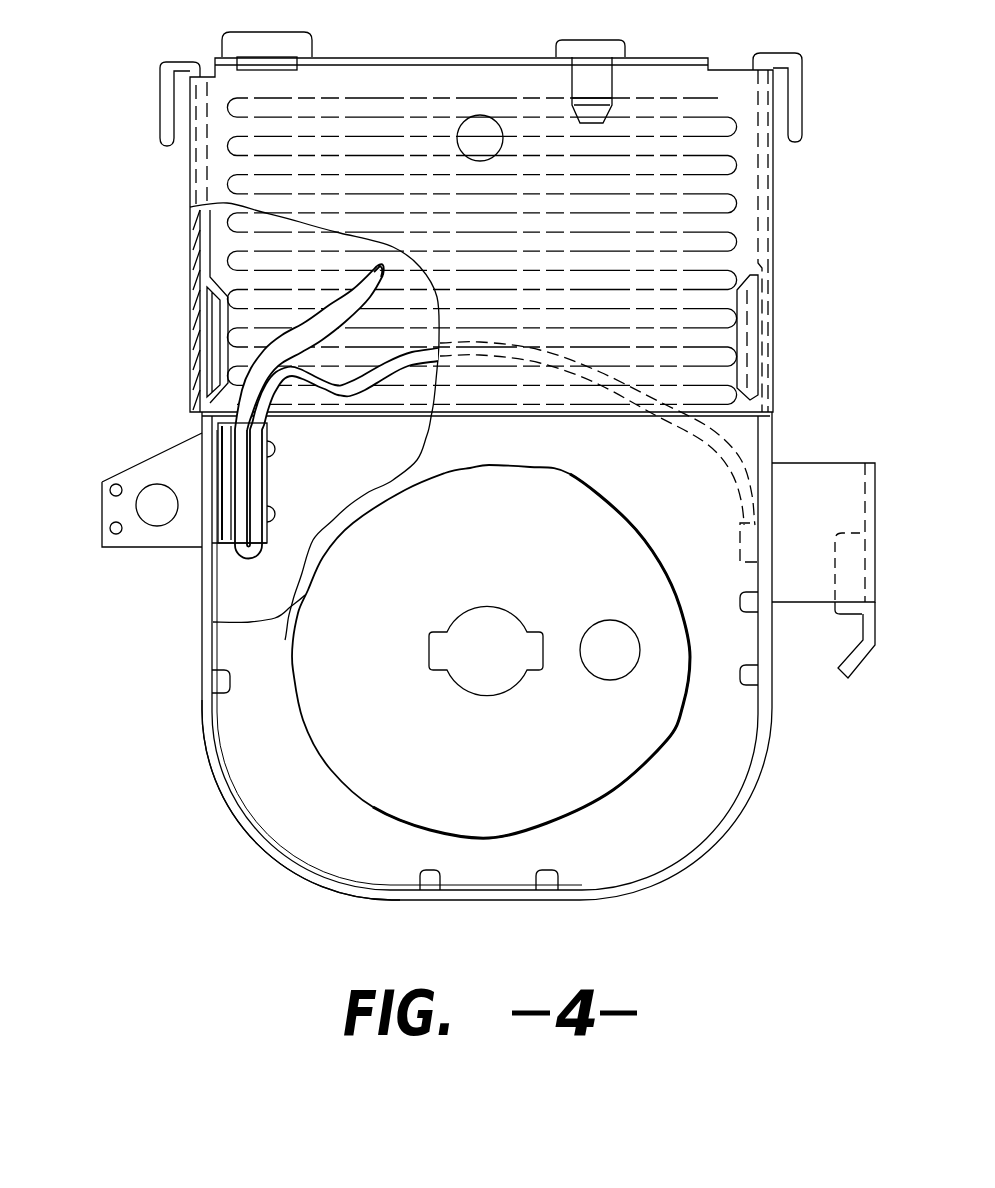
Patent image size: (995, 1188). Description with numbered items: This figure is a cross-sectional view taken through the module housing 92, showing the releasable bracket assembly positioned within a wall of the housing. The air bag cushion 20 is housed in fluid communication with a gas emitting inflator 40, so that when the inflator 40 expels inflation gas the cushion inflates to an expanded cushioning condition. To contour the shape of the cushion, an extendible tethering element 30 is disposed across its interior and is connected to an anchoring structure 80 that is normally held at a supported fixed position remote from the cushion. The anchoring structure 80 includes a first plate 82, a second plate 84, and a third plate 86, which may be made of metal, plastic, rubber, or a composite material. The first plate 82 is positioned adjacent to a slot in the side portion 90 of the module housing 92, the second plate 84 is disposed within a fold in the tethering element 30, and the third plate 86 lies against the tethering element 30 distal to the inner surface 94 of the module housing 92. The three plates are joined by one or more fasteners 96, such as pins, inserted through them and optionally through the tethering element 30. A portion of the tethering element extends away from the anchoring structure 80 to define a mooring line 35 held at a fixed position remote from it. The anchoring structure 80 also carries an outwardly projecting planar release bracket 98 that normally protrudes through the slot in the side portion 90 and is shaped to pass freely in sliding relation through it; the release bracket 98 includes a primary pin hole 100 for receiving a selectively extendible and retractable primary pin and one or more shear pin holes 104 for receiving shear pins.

The air bag cushion 20 is at (727, 232).
The tethering element 30 is at (343, 295).
The mooring line 35 is at (723, 457).
The gas emitting inflator 40 is at (667, 743).
The anchoring structure 80 is at (307, 455).
The first plate 82 is at (227, 543).
The second plate 84 is at (246, 553).
The third plate 86 is at (272, 528).
The side portion 90 is at (202, 685).
The module housing 92 is at (228, 805).
The inner surface 94 is at (233, 765).
The fastener 96 is at (272, 507).
The release bracket 98 is at (173, 445).
The primary pin hole 100 is at (150, 527).
The shear pin hole 104 is at (103, 522).